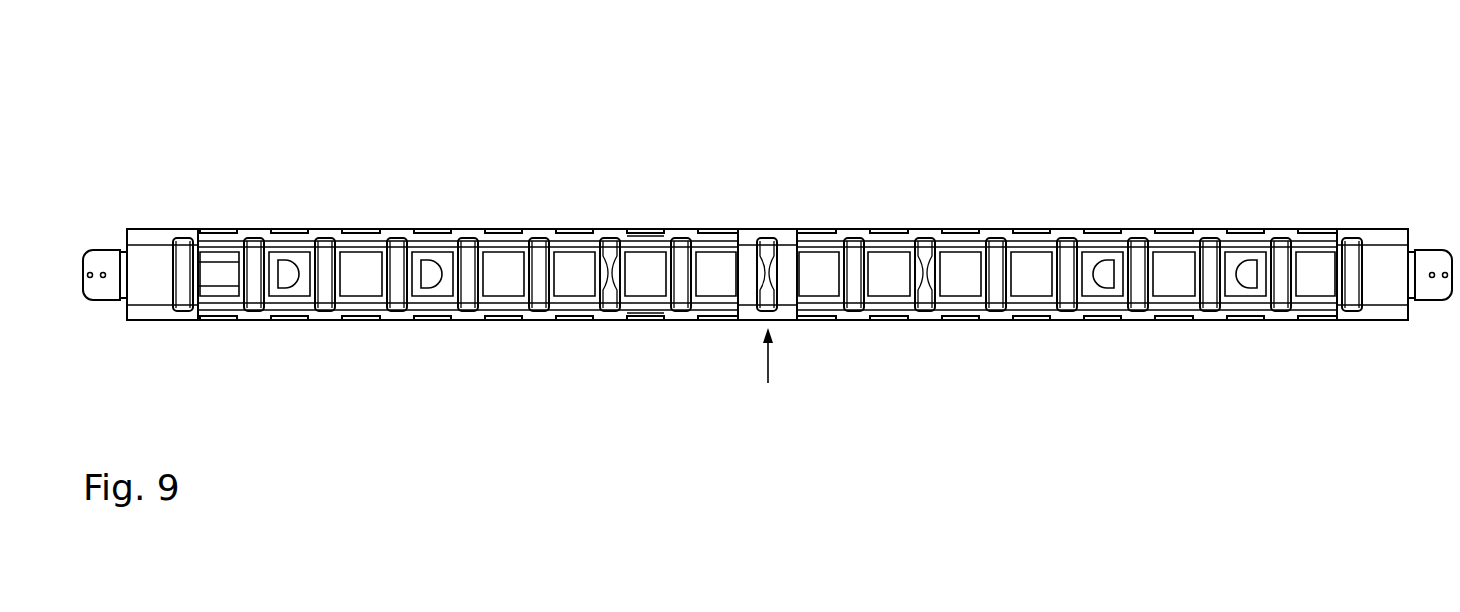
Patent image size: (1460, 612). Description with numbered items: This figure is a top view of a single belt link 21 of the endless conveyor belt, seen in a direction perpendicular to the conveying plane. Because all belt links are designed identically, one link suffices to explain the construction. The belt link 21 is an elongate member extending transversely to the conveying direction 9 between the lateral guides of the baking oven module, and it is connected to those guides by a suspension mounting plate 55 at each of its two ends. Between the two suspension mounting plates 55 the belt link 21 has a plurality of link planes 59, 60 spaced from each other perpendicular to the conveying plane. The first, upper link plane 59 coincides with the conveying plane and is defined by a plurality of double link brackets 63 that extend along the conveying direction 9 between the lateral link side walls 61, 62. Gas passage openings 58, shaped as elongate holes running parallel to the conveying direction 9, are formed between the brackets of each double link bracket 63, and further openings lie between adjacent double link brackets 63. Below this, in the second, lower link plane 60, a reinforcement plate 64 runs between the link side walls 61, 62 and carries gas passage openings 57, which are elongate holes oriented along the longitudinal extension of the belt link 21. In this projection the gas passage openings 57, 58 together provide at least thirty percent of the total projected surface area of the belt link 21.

The belt link 21 is at (890, 152).
The suspension mounting plate 55 is at (108, 258).
The gas passage opening 57 is at (208, 278).
The gas passage opening 58 is at (325, 277).
The first, upper link plane 59 is at (510, 300).
The second, lower link plane 60 is at (440, 292).
The link side wall 61 is at (655, 312).
The link side wall 62 is at (658, 230).
The double link bracket 63 is at (374, 277).
The reinforcement plate 64 is at (585, 293).
The conveying direction 9 is at (766, 350).